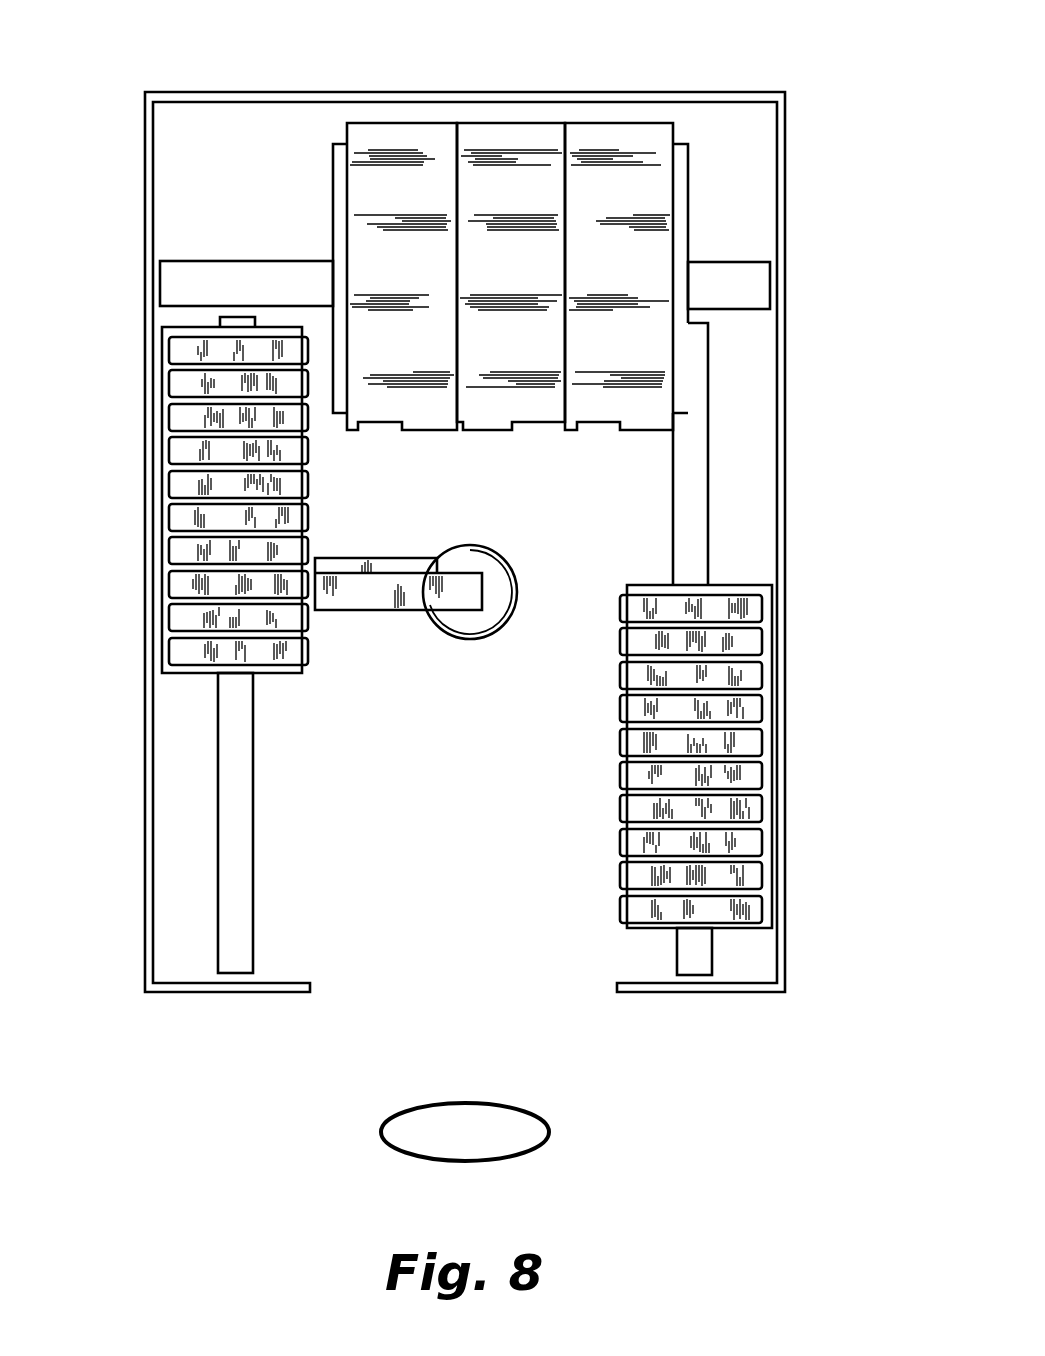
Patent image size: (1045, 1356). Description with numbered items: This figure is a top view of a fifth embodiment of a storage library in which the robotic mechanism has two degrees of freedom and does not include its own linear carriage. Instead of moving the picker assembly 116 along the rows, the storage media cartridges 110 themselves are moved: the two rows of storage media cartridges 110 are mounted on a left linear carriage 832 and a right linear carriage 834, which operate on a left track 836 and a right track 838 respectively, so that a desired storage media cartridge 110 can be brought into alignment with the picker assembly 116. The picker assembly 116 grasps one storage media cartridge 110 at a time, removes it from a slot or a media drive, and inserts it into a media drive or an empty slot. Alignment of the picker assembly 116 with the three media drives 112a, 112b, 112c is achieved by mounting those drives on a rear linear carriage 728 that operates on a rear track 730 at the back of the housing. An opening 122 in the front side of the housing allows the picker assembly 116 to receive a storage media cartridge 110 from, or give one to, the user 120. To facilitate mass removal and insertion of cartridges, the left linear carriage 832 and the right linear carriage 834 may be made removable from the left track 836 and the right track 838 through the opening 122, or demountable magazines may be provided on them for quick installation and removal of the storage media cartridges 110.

The storage media cartridges 110 is at (135, 343).
The media drive 112a is at (395, 132).
The media drive 112b is at (512, 132).
The media drive 112c is at (627, 132).
The picker assembly 116 is at (361, 606).
The user 120 is at (549, 1130).
The opening 122 is at (553, 998).
The rear linear carriage 728 is at (680, 221).
The rear track 730 is at (757, 291).
The left linear carriage 832 is at (180, 670).
The right linear carriage 834 is at (733, 585).
The left track 836 is at (227, 818).
The right track 838 is at (690, 493).